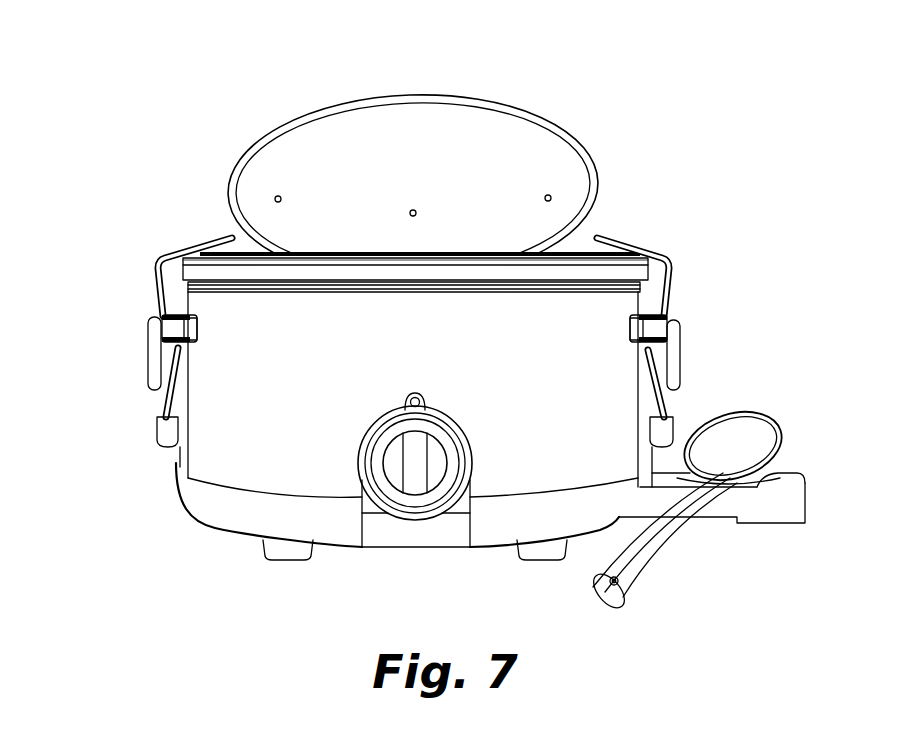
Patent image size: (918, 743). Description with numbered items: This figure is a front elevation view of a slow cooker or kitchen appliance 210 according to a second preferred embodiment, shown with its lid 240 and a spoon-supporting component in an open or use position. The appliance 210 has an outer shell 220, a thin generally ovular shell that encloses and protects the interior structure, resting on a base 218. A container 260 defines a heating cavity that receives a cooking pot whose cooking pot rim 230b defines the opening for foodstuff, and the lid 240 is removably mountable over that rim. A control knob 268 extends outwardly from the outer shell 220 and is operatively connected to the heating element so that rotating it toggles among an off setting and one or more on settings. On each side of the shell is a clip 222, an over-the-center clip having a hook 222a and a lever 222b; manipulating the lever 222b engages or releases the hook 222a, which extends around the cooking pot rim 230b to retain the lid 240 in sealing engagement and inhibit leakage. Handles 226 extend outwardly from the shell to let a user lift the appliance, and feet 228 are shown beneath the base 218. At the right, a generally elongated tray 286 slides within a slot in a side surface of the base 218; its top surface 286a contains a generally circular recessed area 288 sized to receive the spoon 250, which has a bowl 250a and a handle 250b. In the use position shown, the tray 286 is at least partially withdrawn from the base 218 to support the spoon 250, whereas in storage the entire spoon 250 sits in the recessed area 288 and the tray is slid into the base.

The kitchen appliance 210 is at (652, 148).
The lid 240 is at (494, 101).
The cooking pot rim 230b is at (634, 263).
The container 260 is at (610, 313).
The clip 222 is at (672, 325).
The hook 222a is at (166, 257).
The lever 222b is at (148, 375).
The handle 226 is at (157, 440).
The outer shell 220 is at (217, 458).
The base 218 is at (230, 513).
The control knob 268 is at (410, 483).
The feet 228 is at (545, 556).
The spoon 250 is at (673, 527).
The bowl 250a is at (772, 414).
The handle 250b is at (627, 588).
The tray 286 is at (805, 505).
The top surface 286a is at (793, 481).
The recessed area 288 is at (778, 489).